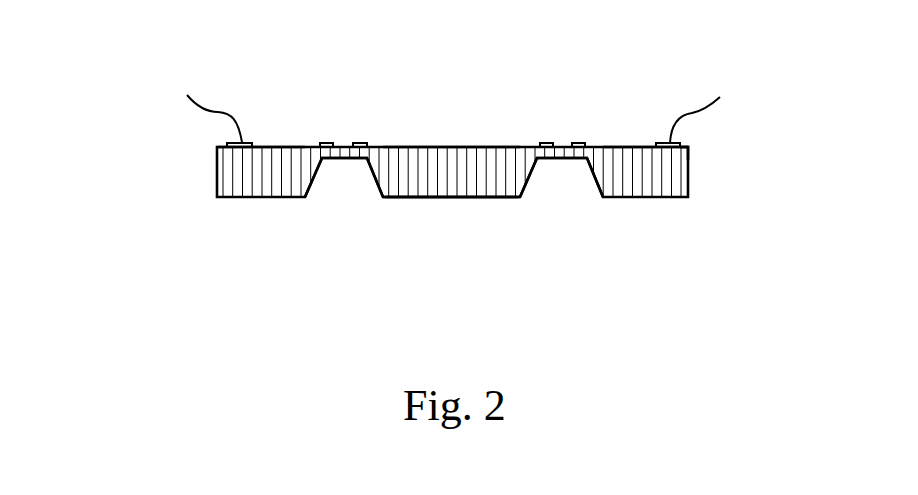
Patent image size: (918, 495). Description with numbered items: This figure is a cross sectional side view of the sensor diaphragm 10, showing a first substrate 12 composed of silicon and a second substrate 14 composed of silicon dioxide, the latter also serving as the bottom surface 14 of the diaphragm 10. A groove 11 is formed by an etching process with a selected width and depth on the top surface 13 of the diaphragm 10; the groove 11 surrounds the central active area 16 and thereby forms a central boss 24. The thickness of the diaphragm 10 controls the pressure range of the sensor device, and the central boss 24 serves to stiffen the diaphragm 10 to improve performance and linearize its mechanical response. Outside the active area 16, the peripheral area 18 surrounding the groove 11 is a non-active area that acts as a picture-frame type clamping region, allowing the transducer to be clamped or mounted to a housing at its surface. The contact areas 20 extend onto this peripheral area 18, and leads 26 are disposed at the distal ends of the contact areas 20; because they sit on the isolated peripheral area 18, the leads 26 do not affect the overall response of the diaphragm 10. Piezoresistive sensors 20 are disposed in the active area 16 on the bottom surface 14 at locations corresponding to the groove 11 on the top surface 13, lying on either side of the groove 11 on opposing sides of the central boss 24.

The diaphragm 10 is at (188, 165).
The groove 11 is at (343, 196).
The first substrate 12 is at (688, 180).
The top surface 13 is at (495, 208).
The second substrate 14 is at (702, 141).
The active area 16 is at (455, 112).
The peripheral area 18 is at (278, 137).
The contact areas 20 is at (320, 135).
The central boss 24 is at (437, 183).
The leads 26 is at (213, 107).